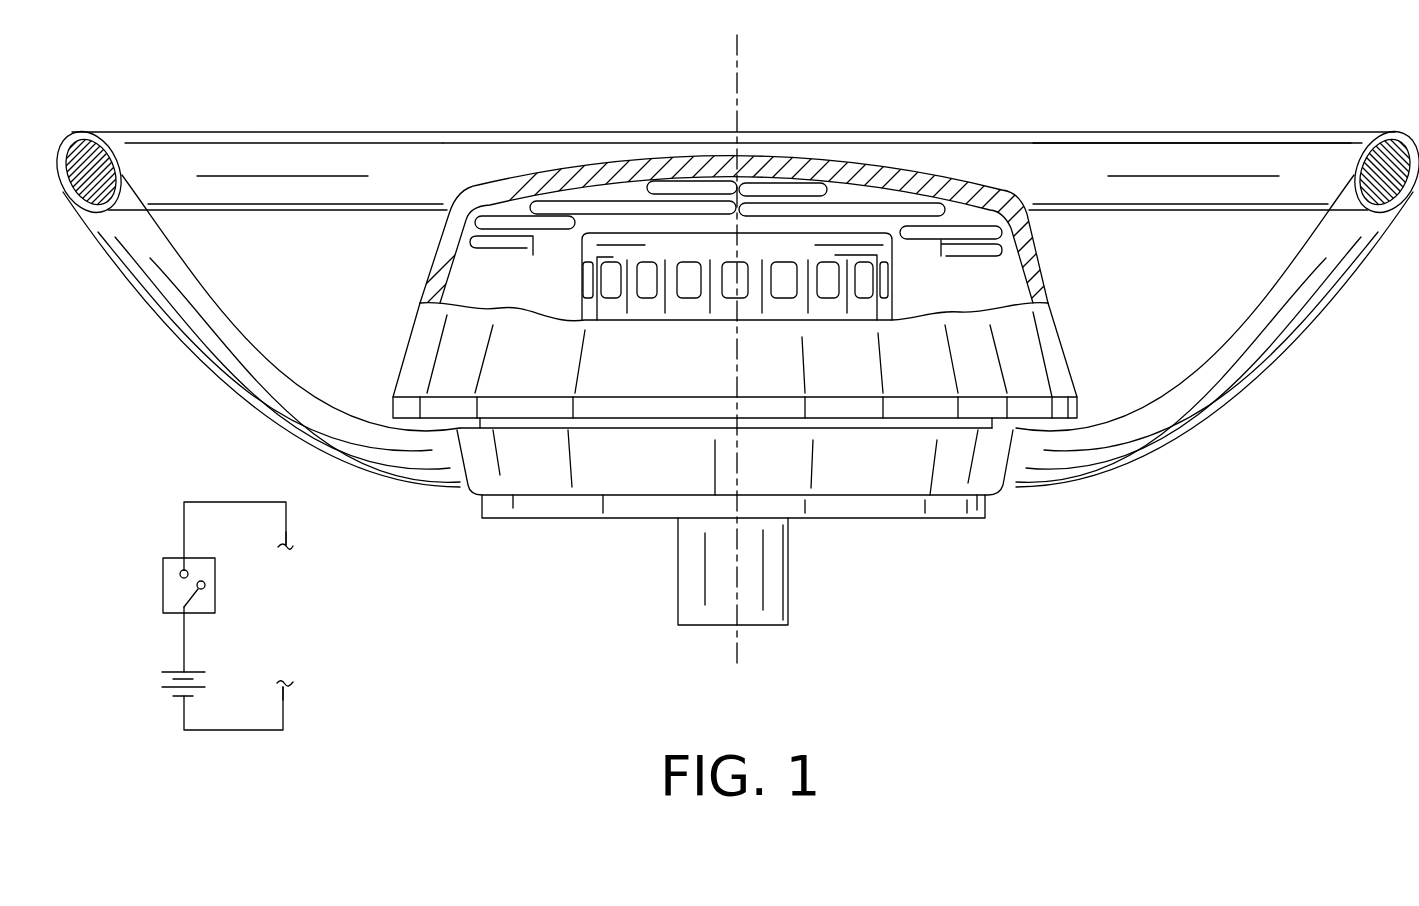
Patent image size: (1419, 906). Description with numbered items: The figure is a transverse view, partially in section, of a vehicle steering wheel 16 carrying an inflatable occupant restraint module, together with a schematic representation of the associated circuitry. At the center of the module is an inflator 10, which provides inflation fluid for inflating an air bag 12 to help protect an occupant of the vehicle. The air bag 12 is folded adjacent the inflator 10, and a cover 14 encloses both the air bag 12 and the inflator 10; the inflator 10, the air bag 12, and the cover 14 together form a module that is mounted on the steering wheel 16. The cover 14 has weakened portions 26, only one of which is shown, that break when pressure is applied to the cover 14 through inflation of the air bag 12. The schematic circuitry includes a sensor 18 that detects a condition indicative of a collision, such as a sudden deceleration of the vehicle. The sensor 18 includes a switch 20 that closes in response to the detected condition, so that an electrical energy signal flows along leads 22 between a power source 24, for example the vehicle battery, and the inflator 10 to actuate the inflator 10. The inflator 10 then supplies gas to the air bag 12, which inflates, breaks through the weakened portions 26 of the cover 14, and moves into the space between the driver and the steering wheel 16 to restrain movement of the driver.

The inflator 10 is at (873, 235).
The air bag 12 is at (830, 208).
The cover 14 is at (632, 163).
The vehicle steering wheel 16 is at (305, 131).
The sensor 18 is at (172, 562).
The switch 20 is at (214, 597).
The leads 22 is at (287, 522).
The power source 24 is at (172, 673).
The weakened portions 26 is at (736, 153).